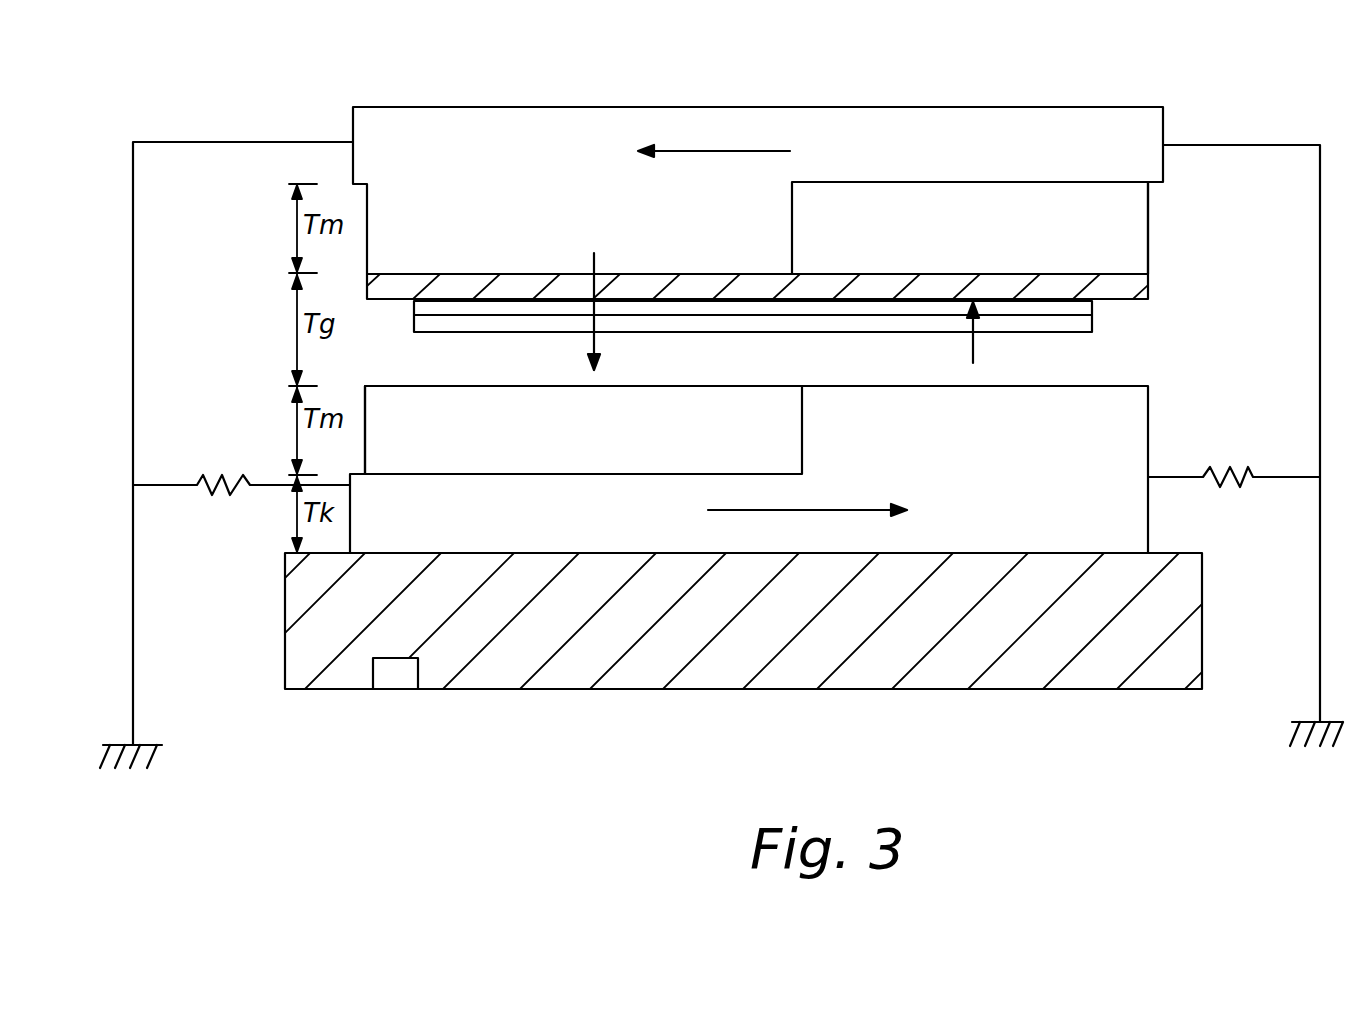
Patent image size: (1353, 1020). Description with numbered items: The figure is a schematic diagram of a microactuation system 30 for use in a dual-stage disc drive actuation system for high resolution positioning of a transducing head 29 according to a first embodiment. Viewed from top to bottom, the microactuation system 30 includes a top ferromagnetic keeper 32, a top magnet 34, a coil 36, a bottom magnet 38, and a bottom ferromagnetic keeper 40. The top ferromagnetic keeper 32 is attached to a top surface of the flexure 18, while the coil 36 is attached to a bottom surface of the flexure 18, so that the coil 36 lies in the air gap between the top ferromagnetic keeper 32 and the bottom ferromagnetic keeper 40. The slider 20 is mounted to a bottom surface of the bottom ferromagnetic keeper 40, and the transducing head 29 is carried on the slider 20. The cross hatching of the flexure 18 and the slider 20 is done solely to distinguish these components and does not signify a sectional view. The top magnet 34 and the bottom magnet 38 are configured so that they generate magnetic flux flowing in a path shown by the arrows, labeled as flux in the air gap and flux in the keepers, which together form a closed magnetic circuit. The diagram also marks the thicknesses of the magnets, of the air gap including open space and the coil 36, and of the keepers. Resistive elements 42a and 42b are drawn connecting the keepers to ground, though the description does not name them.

The microactuation system 30 is at (1068, 67).
The top ferromagnetic keeper 32 is at (1164, 107).
The top magnet 34 is at (1132, 205).
The flexure 18 is at (1148, 285).
The coil 36 is at (1092, 322).
The bottom ferromagnetic keeper 40 is at (1148, 417).
The bottom magnet 38 is at (377, 386).
The slider 20 is at (1202, 650).
The transducing head 29 is at (398, 672).
The first resistor 42a is at (213, 490).
The second resistor 42b is at (1225, 485).